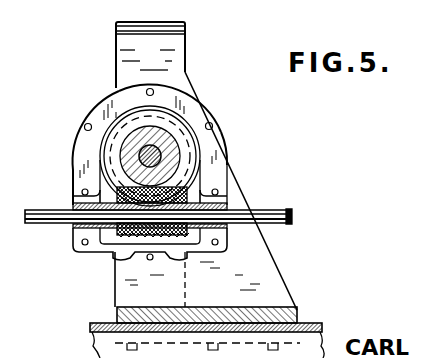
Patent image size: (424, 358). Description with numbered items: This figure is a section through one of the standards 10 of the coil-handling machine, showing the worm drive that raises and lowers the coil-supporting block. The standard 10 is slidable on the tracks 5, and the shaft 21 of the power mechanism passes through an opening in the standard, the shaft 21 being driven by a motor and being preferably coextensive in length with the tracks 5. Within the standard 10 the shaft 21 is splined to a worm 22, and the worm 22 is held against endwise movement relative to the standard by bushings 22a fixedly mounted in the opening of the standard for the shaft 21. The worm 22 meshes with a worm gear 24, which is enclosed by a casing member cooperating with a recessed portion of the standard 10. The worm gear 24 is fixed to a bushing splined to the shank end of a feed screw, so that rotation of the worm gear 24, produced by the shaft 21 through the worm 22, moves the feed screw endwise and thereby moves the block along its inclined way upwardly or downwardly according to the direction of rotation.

The tracks 5 is at (308, 325).
The standard 10 is at (273, 278).
The shaft 21 is at (277, 212).
The worm 22 is at (121, 247).
The bushings 22a is at (228, 208).
The worm gear 24 is at (187, 160).